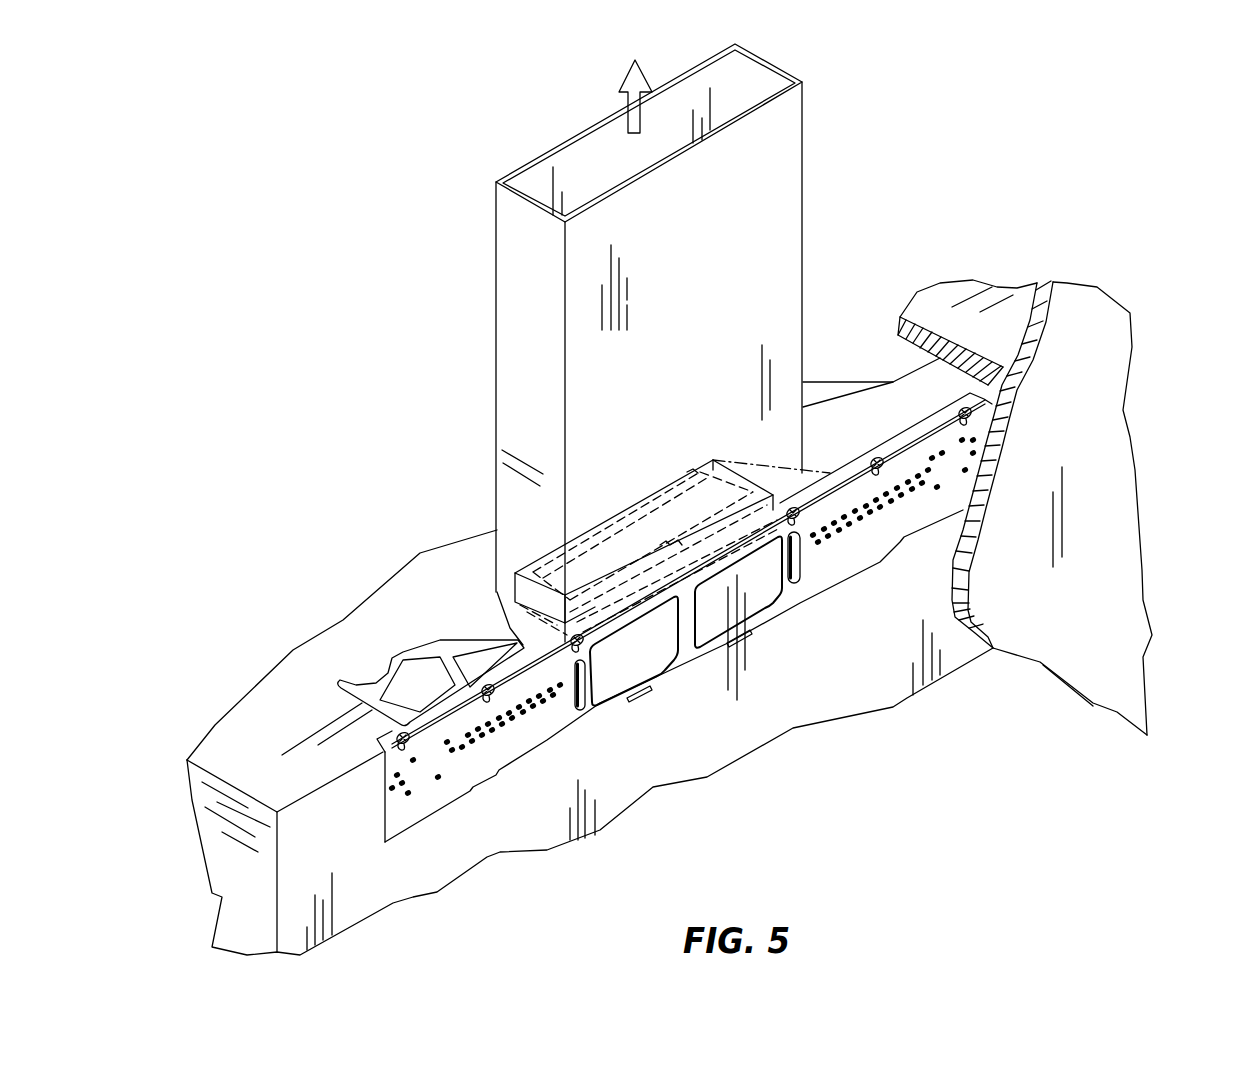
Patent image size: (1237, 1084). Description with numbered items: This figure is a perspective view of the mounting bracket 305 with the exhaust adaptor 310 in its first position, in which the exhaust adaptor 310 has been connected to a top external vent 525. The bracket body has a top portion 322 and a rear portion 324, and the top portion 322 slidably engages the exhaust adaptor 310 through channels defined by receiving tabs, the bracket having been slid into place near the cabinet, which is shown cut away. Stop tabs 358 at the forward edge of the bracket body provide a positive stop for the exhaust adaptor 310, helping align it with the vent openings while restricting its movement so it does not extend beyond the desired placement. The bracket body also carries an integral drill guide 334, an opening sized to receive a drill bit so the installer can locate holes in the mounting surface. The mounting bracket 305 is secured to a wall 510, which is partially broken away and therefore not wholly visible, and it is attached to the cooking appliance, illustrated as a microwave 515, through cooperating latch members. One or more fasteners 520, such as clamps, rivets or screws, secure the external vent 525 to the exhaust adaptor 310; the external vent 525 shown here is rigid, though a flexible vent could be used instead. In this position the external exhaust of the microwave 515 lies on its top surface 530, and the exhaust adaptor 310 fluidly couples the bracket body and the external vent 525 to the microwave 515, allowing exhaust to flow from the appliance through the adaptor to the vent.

The mounting bracket 305 is at (657, 678).
The exhaust adaptor 310 is at (645, 483).
The top portion 322 is at (825, 487).
The rear portion 324 is at (940, 514).
The drill guide 334 is at (356, 643).
The stop tabs 358 is at (640, 702).
The wall 510 is at (1113, 460).
The microwave 515 is at (260, 740).
The fasteners 520 is at (547, 598).
The external vent 525 is at (797, 189).
The top surface 530 is at (818, 397).